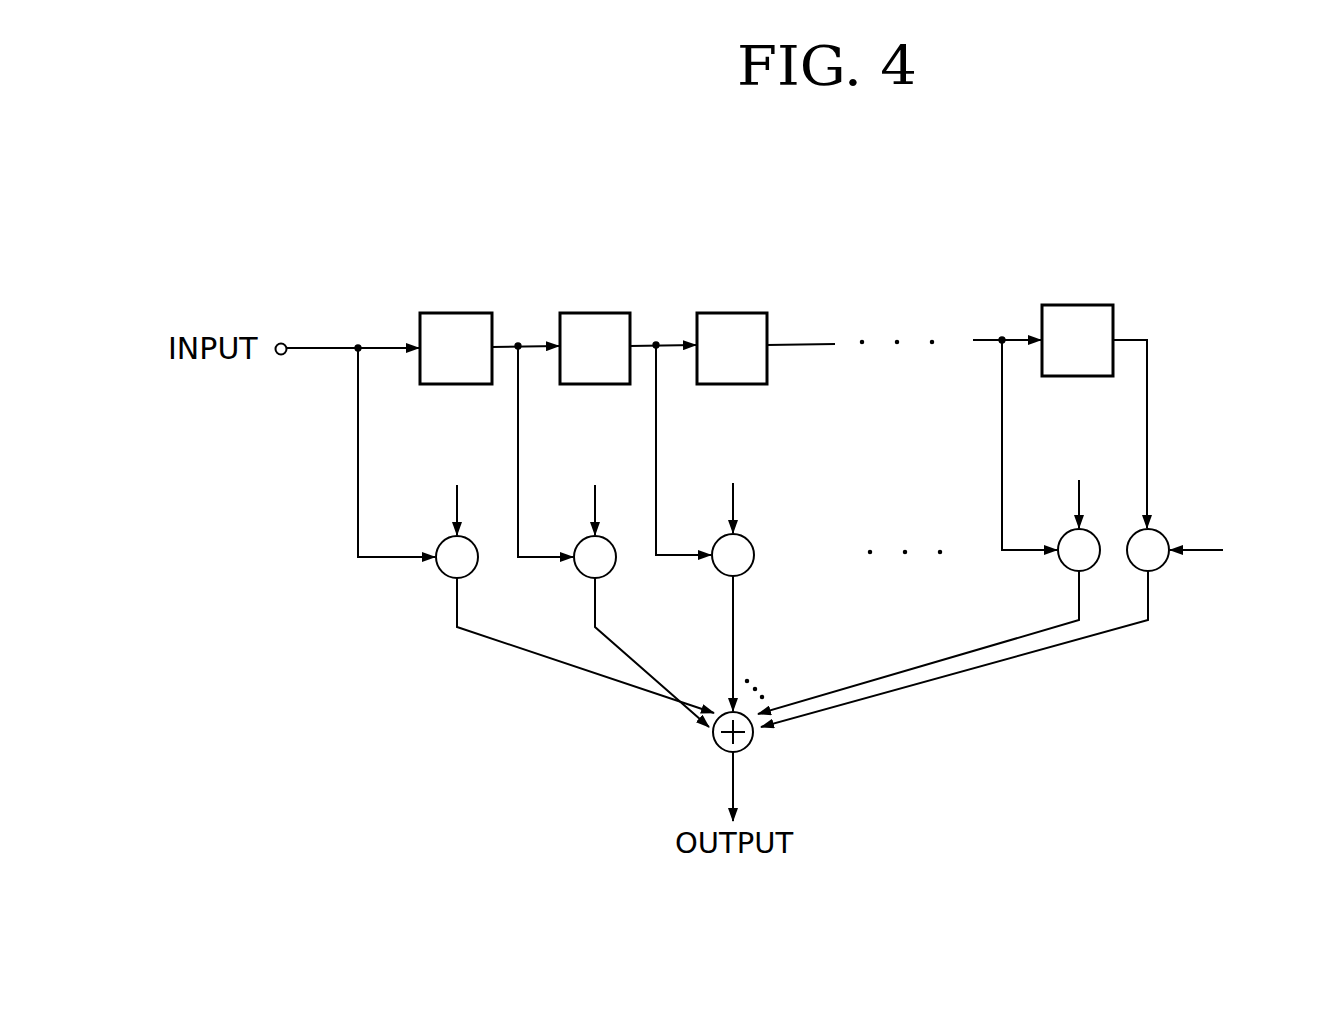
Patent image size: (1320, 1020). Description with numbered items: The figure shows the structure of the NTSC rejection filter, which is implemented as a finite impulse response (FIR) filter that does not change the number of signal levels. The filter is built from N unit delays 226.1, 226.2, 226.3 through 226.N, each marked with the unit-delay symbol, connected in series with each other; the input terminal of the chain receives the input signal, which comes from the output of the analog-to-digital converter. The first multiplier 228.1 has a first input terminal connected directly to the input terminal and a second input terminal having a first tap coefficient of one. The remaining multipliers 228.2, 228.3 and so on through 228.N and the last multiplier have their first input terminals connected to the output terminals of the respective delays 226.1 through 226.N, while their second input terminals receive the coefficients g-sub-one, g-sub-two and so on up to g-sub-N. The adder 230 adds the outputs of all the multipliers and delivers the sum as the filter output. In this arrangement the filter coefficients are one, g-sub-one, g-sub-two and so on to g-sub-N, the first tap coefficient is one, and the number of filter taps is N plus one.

The delay 226.1 is at (462, 312).
The delay 226.2 is at (593, 312).
The delay 226.3 is at (733, 312).
The delay 226.N is at (1077, 305).
The first multiplier 228.1 is at (440, 574).
The multiplier 228.2 is at (578, 573).
The multiplier 228.3 is at (717, 571).
The multiplier 228.N is at (1062, 566).
The adder 230 is at (748, 747).